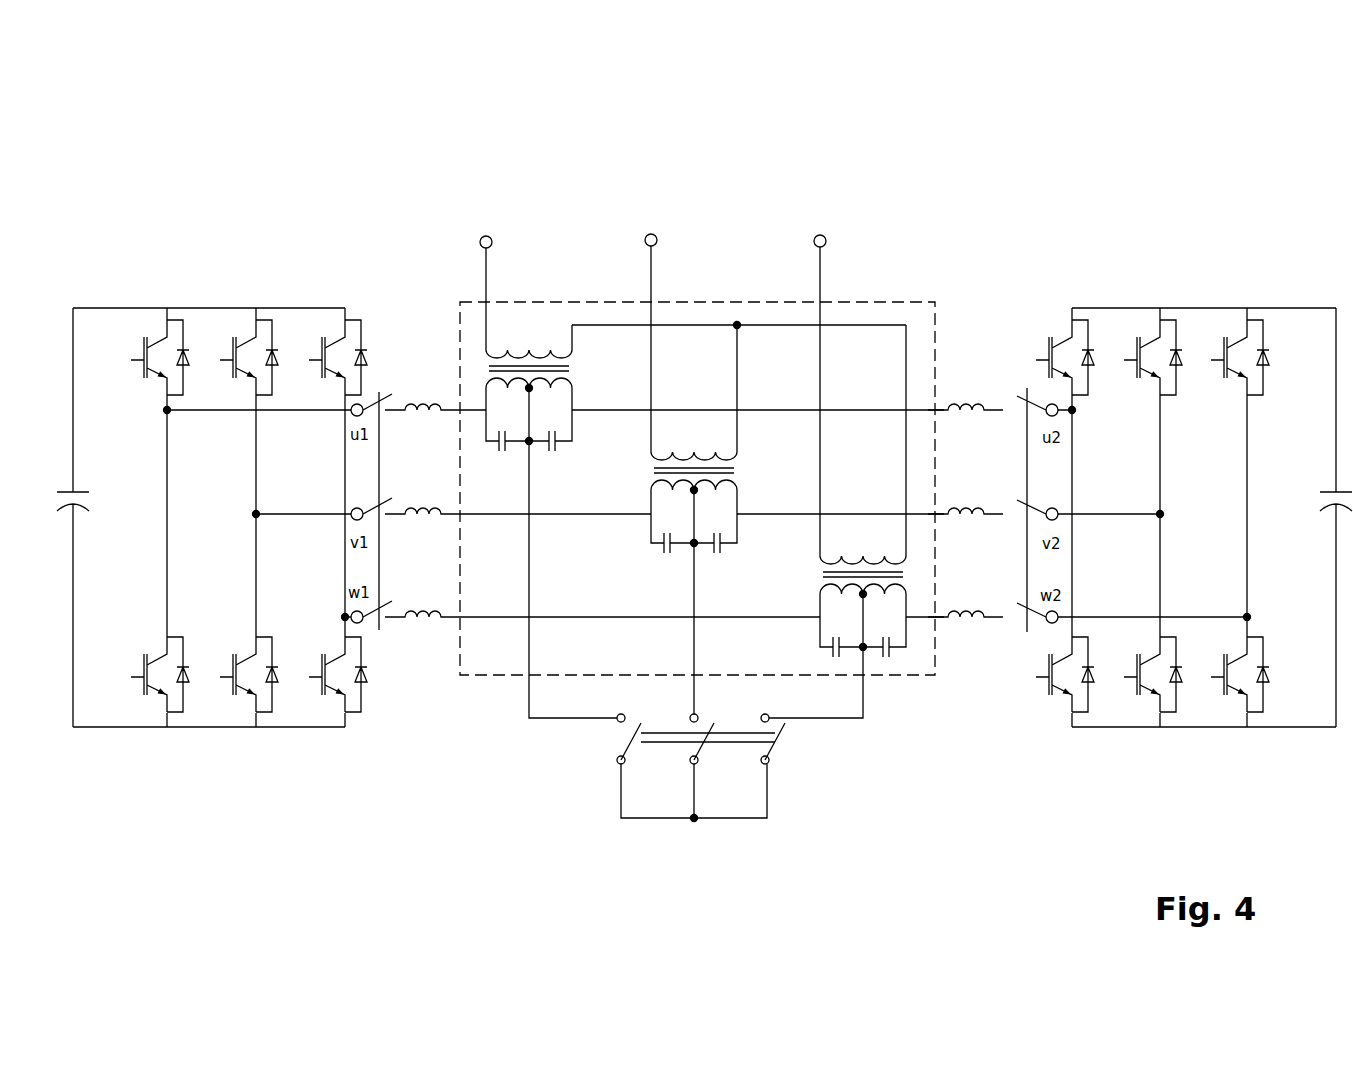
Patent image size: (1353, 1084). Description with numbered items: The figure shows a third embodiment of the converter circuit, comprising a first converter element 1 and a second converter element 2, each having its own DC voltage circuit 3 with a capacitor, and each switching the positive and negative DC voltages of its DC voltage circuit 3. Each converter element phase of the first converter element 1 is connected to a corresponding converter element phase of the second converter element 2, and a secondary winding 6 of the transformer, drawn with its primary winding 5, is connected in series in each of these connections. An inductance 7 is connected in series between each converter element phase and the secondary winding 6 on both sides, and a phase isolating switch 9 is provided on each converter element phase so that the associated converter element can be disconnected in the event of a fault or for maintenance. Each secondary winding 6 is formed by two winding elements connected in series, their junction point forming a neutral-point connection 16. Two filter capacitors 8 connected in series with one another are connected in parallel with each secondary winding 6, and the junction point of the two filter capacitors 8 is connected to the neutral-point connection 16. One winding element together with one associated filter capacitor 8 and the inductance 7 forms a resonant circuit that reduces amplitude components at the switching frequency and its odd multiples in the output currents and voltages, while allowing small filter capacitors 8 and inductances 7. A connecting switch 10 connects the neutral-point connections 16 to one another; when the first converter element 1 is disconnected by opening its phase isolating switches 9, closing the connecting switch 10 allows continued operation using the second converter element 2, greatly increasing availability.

The first converter element 1 is at (203, 337).
The second converter element 2 is at (1200, 353).
The DC voltage circuit 3 is at (82, 468).
The primary winding 5 is at (505, 352).
The secondary winding 6 is at (540, 388).
The inductance 7 is at (408, 407).
The filter capacitor 8 is at (508, 433).
The phase isolating switch 9 is at (392, 394).
The connecting switch 10 is at (692, 653).
The neutral-point connection 16 is at (619, 721).